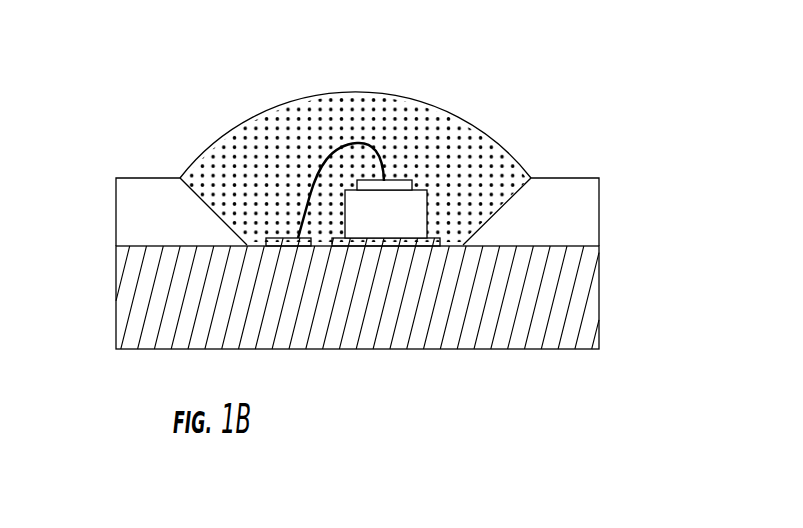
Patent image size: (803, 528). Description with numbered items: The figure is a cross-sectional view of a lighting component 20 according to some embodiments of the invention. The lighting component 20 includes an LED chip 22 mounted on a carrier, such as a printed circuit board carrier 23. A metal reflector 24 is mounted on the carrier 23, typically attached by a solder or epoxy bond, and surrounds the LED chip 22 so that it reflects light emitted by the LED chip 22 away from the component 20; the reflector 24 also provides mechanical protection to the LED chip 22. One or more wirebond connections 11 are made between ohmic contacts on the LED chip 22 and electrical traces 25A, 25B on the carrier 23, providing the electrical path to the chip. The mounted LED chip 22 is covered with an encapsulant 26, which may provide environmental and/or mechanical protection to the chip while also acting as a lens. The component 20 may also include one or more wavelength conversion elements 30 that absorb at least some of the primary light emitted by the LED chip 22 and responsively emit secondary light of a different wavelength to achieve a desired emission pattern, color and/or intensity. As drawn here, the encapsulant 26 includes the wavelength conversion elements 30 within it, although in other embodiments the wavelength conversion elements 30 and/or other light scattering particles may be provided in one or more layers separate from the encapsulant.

The lighting component 20 is at (590, 88).
The wirebond connection 11 is at (357, 143).
The LED chip 22 is at (413, 181).
The printed circuit board carrier 23 is at (593, 292).
The metal reflector 24 is at (142, 178).
The electrical trace 25A is at (293, 246).
The electrical trace 25B is at (407, 246).
The encapsulant 26 is at (302, 99).
The wavelength conversion element 30 is at (253, 150).